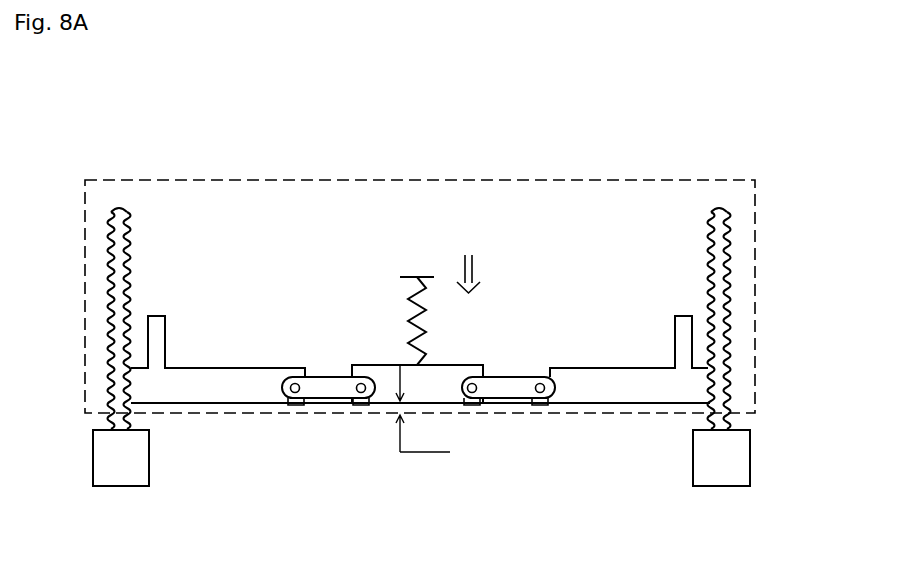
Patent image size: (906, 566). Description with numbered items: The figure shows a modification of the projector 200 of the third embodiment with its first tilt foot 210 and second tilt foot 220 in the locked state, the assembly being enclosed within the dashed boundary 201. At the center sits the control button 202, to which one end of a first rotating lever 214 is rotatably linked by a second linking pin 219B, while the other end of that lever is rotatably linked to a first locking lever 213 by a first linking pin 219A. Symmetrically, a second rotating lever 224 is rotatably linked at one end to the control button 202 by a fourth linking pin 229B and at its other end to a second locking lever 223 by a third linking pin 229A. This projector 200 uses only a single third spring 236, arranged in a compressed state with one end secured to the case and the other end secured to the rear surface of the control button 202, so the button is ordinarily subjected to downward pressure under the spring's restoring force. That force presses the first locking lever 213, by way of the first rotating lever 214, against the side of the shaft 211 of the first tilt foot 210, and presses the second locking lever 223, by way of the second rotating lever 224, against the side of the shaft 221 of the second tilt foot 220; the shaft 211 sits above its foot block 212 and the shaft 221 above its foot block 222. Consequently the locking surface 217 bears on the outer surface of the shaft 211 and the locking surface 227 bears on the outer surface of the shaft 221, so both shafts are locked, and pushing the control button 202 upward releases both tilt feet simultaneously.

The projector 200 is at (562, 165).
The locked state region 201 is at (418, 179).
The control button 202 is at (454, 374).
The first tilt foot 210 is at (728, 286).
The shaft 211 is at (719, 212).
The right weight 212 is at (722, 475).
The first locking lever 213 is at (637, 392).
The first rotating lever 214 is at (512, 376).
The locking surface 217 is at (728, 378).
The first linking pin 219A is at (539, 399).
The second linking pin 219B is at (470, 399).
The second tilt foot 220 is at (112, 285).
The shaft 221 is at (118, 212).
The left weight 222 is at (120, 475).
The second locking lever 223 is at (228, 393).
The second rotating lever 224 is at (322, 376).
The locking surface 227 is at (112, 378).
The third linking pin 229A is at (293, 399).
The fourth linking pin 229B is at (360, 399).
The third spring 236 is at (402, 312).